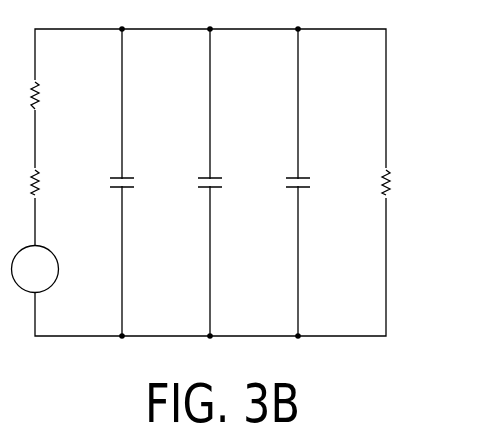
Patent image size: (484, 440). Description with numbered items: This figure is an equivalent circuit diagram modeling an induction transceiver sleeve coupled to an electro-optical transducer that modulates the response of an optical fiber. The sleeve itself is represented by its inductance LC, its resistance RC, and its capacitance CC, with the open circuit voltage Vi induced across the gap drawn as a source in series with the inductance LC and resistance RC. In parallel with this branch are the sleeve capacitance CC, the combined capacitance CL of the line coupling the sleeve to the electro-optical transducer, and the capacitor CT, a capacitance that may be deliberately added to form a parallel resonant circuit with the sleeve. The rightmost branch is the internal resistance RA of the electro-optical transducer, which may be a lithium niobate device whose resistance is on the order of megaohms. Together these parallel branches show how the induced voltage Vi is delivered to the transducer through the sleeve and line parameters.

The inductance of the sleeve LC is at (52, 100).
The resistance of the sleeve RC is at (53, 189).
The open circuit voltage Vi is at (35, 269).
The capacitance of the sleeve CC is at (141, 191).
The combined line capacitance CL is at (228, 191).
The capacitor CT is at (316, 191).
The internal resistance RA is at (405, 188).